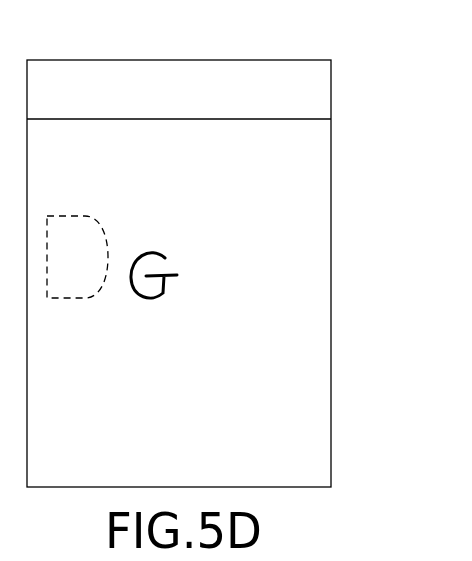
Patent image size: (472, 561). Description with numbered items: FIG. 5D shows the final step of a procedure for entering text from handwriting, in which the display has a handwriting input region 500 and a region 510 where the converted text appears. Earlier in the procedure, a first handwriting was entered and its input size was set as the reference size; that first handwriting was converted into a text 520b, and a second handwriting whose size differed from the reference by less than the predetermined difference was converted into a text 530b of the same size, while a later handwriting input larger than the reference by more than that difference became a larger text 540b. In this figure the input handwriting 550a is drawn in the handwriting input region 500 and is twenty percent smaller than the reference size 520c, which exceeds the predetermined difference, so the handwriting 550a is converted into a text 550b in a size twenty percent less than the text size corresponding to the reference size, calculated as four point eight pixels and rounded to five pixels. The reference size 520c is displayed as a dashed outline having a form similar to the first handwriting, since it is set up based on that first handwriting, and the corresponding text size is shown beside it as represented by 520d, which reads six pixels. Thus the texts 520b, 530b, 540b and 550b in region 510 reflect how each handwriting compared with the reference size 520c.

The handwriting input region 500 is at (322, 233).
The region 510 is at (322, 97).
The text 520b is at (50, 82).
The text 530b is at (78, 81).
The text 540b is at (126, 80).
The text 550b is at (148, 97).
The reference size 520c is at (65, 214).
The input handwriting 550a is at (145, 252).
The text size display 520d is at (73, 320).